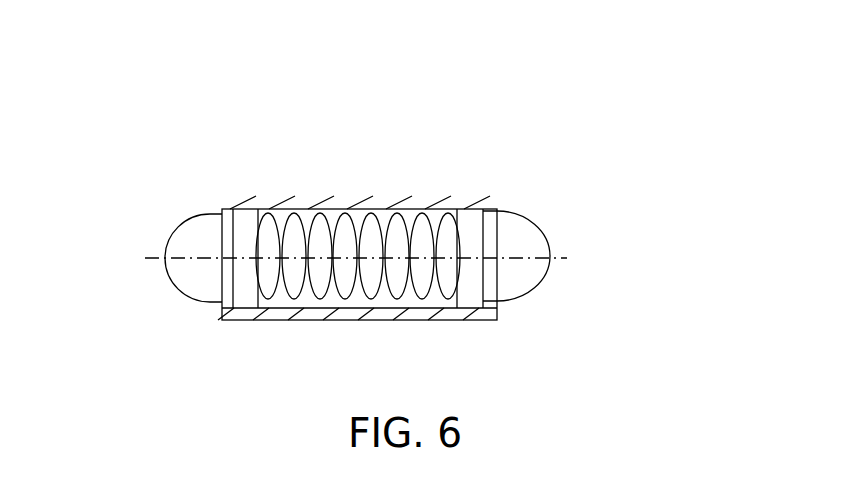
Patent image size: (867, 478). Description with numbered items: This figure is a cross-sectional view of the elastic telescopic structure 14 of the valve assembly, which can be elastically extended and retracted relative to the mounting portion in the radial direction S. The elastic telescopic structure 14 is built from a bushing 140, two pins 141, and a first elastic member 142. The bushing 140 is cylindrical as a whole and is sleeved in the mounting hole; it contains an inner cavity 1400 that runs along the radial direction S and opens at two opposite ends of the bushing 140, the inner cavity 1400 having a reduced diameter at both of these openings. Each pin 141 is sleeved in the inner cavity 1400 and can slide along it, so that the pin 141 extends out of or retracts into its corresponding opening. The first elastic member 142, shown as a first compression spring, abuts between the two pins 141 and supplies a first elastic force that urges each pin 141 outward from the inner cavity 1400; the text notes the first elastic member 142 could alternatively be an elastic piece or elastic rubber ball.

The elastic telescopic structure 14 is at (582, 82).
The bushing 140 is at (482, 208).
The pin 141 is at (188, 296).
The first elastic member 142 is at (446, 288).
The inner cavity 1400 is at (392, 210).
The radial direction S is at (159, 254).